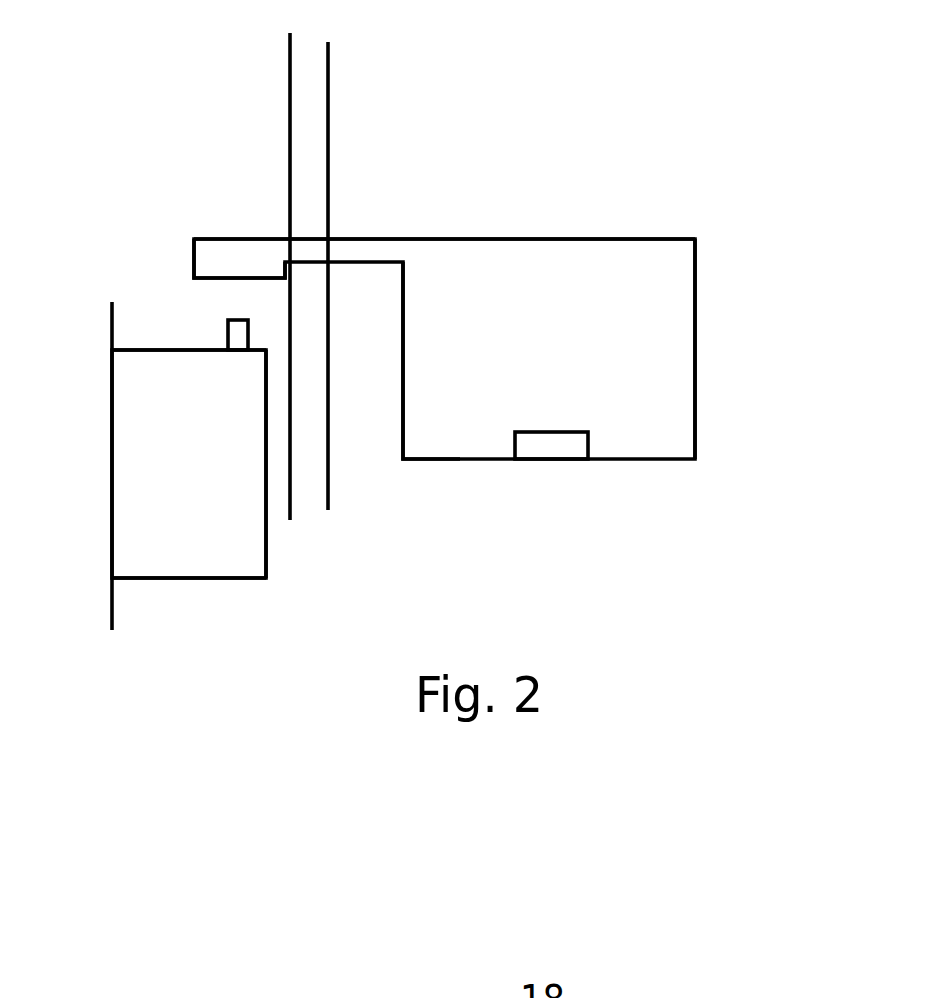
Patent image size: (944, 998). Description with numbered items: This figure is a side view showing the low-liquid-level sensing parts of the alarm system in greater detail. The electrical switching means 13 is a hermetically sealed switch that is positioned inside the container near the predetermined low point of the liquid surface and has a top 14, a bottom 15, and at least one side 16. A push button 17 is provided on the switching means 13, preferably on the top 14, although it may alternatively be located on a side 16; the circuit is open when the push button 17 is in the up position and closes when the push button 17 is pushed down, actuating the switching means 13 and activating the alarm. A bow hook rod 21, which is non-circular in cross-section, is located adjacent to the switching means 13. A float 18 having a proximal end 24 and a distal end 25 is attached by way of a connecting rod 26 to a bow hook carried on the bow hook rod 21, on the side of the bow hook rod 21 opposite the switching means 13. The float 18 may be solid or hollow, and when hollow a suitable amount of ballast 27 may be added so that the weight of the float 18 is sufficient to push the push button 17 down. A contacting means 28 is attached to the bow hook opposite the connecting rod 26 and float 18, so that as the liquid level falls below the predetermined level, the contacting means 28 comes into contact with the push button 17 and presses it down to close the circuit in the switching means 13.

The electrical switching means 13 is at (175, 548).
The top 14 is at (145, 348).
The bottom 15 is at (228, 578).
The side 16 is at (265, 553).
The push button 17 is at (228, 323).
The float 18 is at (627, 235).
The bow hook rod 21 is at (318, 77).
The proximal end 24 is at (403, 432).
The distal end 25 is at (695, 347).
The connecting rod 26 is at (367, 238).
The ballast 27 is at (555, 446).
The contacting means 28 is at (218, 247).